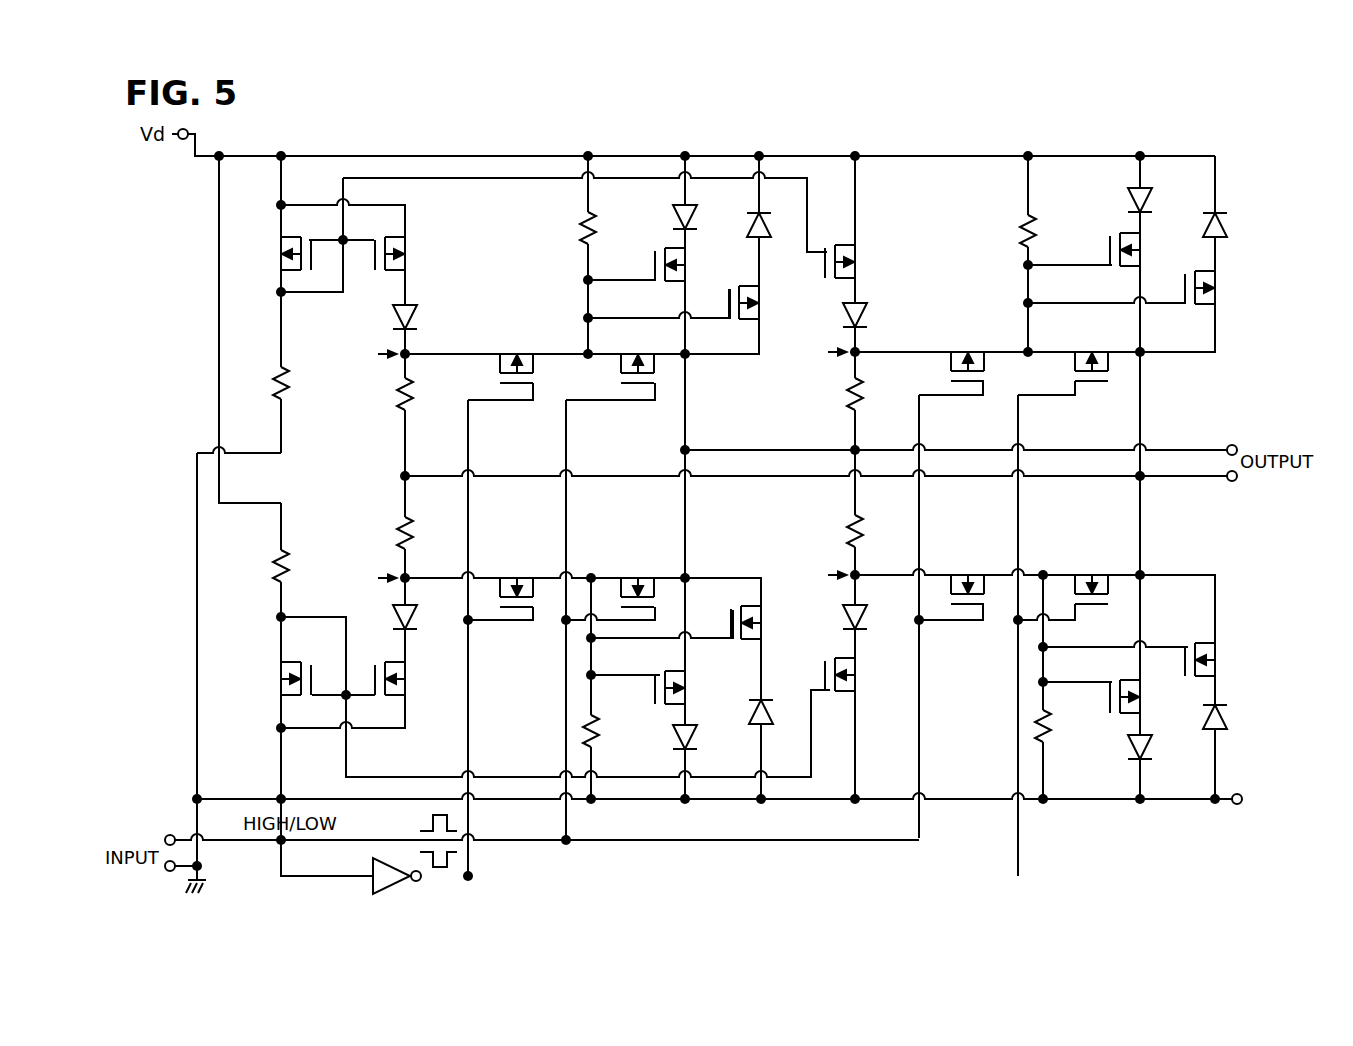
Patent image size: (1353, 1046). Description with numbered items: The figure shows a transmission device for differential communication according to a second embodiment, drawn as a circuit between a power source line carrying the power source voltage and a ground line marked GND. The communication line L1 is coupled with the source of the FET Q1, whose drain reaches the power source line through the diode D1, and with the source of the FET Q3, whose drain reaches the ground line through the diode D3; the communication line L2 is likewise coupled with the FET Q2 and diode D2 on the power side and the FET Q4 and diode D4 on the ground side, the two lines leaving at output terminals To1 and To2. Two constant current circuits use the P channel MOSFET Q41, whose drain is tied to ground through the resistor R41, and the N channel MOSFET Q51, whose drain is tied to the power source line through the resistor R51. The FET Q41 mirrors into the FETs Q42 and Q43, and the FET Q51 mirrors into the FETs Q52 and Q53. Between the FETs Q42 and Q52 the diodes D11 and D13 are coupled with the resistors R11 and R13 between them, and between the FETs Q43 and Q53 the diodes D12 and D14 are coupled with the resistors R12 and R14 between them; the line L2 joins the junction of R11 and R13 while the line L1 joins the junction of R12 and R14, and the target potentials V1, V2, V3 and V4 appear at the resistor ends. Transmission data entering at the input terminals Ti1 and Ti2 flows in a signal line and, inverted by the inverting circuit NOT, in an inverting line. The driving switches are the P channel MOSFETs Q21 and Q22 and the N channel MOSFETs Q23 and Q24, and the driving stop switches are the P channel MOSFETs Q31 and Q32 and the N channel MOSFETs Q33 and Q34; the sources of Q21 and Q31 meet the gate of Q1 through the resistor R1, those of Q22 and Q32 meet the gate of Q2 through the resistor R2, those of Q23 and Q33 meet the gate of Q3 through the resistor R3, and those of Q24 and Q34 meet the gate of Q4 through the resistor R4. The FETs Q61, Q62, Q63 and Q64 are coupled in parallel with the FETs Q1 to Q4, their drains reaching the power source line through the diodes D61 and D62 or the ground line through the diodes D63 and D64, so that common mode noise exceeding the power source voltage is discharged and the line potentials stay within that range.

The P channel MOSFET Q41 is at (280, 257).
The FET Q42 is at (408, 250).
The FET Q43 is at (857, 258).
The N channel MOSFET Q51 is at (280, 686).
The FET Q52 is at (408, 686).
The FET Q53 is at (858, 678).
The field effect transistor Q1 is at (688, 270).
The FET Q2 is at (1142, 262).
The FET Q3 is at (688, 684).
The FET Q4 is at (1142, 690).
The P channel MOSFET Q21 is at (518, 350).
The P channel MOSFET Q22 is at (970, 350).
The N channel MOSFET Q23 is at (524, 574).
The N channel MOSFET Q24 is at (974, 570).
The P channel MOSFET Q31 is at (630, 350).
The P channel MOSFET Q32 is at (1080, 350).
The N channel MOSFET Q33 is at (636, 574).
The N channel MOSFET Q34 is at (1088, 570).
The FET Q61 is at (772, 292).
The FET Q62 is at (1217, 295).
The FET Q63 is at (764, 628).
The FET Q64 is at (1218, 655).
The diode D1 is at (692, 216).
The diode D2 is at (1146, 198).
The diode D3 is at (692, 738).
The diode D4 is at (1146, 746).
The diode D11 is at (396, 318).
The diode D12 is at (842, 314).
The diode D13 is at (398, 616).
The diode D14 is at (844, 618).
The diode D61 is at (764, 232).
The diode D62 is at (1222, 228).
The diode D63 is at (766, 713).
The diode D64 is at (1222, 718).
The resistor R1 is at (580, 236).
The resistor R2 is at (1022, 236).
The resistor R3 is at (596, 730).
The resistor R4 is at (1048, 726).
The resistor R11 is at (396, 398).
The resistor R12 is at (846, 396).
The resistor R13 is at (396, 534).
The resistor R14 is at (846, 532).
The resistor R41 is at (272, 392).
The resistor R51 is at (272, 572).
The communication line L1 is at (1064, 450).
The communication line L2 is at (1064, 476).
The target potential V1 is at (375, 355).
The target potential V2 is at (823, 353).
The target potential V3 is at (375, 579).
The target potential V4 is at (823, 576).
The output terminal To1 is at (1227, 430).
The output terminal To2 is at (1227, 496).
The input terminal Ti1 is at (163, 817).
The input terminal Ti2 is at (163, 886).
The inverting circuit NOT is at (397, 867).
The ground terminal GND is at (1242, 822).